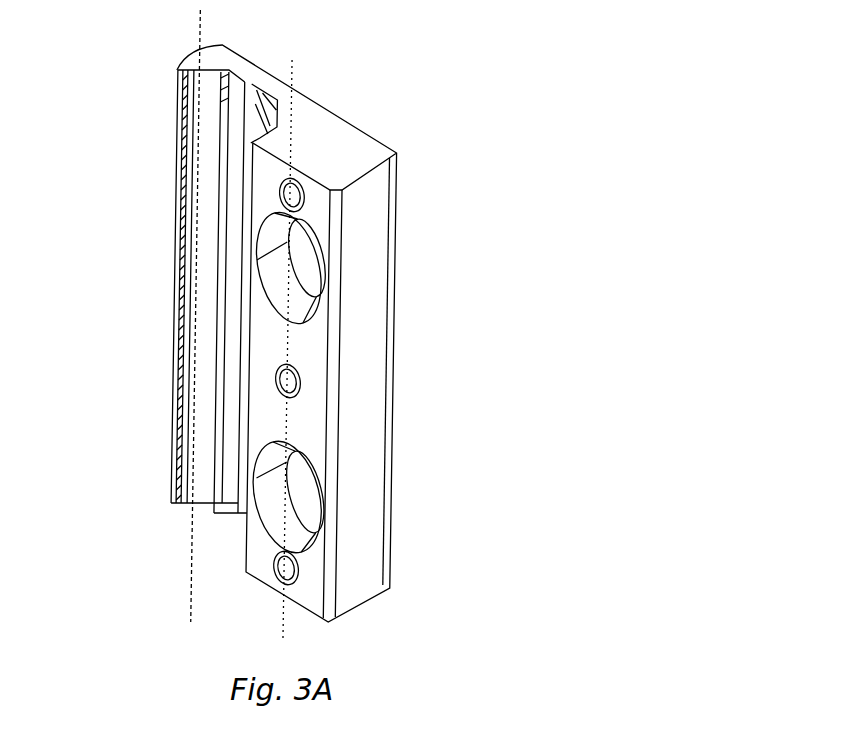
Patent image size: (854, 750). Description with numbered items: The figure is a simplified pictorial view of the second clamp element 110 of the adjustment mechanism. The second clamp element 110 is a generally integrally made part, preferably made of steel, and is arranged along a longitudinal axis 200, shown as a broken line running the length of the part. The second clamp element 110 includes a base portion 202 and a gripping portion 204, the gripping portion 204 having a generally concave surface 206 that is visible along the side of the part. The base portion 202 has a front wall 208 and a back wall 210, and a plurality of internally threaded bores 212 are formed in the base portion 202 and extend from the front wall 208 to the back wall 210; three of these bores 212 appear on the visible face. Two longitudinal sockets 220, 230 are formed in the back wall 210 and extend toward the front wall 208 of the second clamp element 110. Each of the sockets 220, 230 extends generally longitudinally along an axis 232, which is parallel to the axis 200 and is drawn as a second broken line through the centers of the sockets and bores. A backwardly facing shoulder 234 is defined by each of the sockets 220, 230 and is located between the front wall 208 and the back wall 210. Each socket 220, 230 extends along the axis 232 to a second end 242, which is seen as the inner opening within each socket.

The second clamp element 110 is at (439, 128).
The longitudinal axis 200 is at (189, 578).
The base portion 202 is at (278, 415).
The gripping portion 204 is at (208, 440).
The concave surface 206 is at (207, 97).
The front wall 208 is at (393, 343).
The back wall 210 is at (260, 306).
The internally threaded bores 212 is at (278, 186).
The longitudinal socket 220 is at (317, 262).
The longitudinal socket 230 is at (312, 493).
The axis 232 is at (292, 65).
The backwardly facing shoulder 234 is at (293, 231).
The second end 242 is at (316, 296).